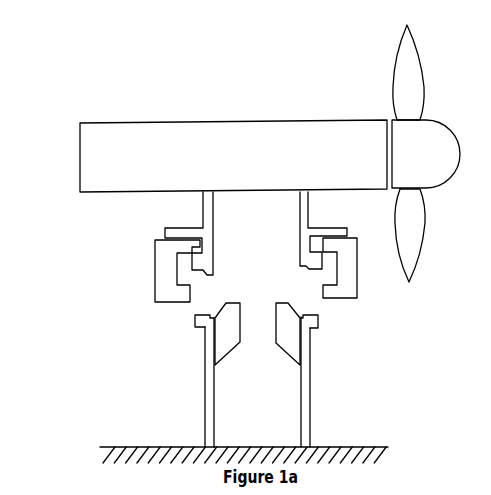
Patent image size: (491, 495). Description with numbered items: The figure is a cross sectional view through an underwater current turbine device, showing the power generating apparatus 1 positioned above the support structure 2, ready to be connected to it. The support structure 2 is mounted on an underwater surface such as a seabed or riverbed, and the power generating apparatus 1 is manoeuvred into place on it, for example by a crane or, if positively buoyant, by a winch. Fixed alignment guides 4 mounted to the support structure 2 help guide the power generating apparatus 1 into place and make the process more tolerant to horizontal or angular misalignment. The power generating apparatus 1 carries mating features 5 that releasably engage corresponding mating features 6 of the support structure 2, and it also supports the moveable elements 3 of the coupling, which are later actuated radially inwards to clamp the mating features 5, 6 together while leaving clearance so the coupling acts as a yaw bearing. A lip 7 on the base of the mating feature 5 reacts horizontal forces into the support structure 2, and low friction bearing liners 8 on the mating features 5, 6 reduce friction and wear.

The power generating apparatus 1 is at (92, 165).
The support structure 2 is at (212, 383).
The moveable elements 3 is at (160, 268).
The fixed alignment guides 4 is at (288, 327).
The mating features 5 is at (198, 262).
The mating features 6 is at (195, 317).
The lip 7 is at (306, 269).
The low friction bearing liners 8 is at (308, 268).